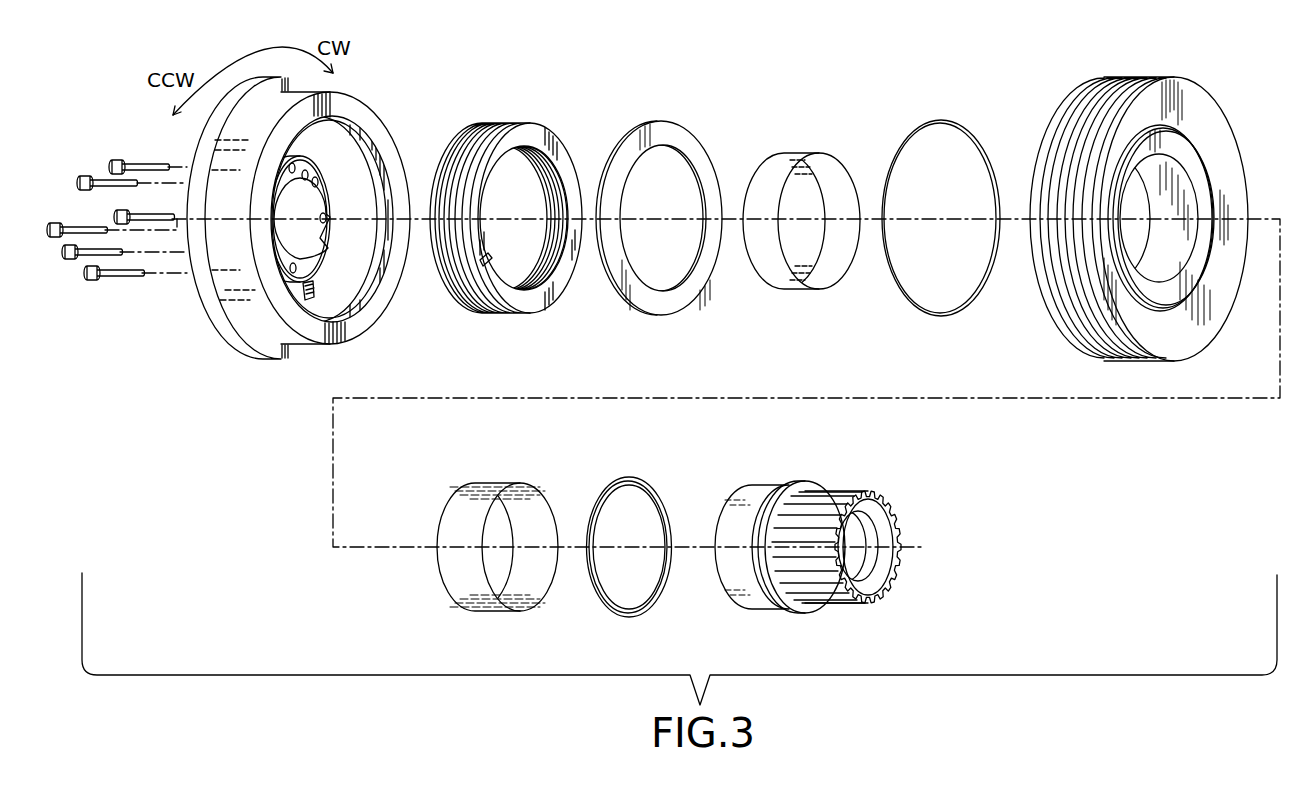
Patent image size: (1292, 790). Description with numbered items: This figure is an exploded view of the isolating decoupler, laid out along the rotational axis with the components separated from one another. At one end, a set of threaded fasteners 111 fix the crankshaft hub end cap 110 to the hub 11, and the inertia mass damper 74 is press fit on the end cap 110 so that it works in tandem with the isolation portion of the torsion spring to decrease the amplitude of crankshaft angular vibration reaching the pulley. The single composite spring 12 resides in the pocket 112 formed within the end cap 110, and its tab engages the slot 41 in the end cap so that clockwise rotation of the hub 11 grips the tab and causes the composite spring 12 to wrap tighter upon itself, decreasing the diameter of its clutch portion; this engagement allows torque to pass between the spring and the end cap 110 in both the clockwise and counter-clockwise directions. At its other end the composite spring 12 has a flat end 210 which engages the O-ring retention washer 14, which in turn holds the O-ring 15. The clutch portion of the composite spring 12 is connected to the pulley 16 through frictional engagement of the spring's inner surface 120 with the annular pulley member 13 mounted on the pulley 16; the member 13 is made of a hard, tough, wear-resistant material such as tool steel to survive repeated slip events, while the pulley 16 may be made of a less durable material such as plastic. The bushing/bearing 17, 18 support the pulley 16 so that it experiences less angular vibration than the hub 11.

The hub 11 is at (767, 488).
The composite spring 12 is at (520, 130).
The pulley member 13 is at (787, 153).
The O-ring retention washer 14 is at (677, 137).
The O-ring 15 is at (960, 123).
The pulley 16 is at (1212, 102).
The bushing/bearing 17 is at (500, 487).
The bushing/bearing 18 is at (645, 482).
The slot 41 is at (330, 287).
The inertia mass damper 74 is at (340, 103).
The crankshaft hub end cap 110 is at (327, 173).
The threaded fasteners 111 is at (153, 158).
The pocket 112 is at (350, 200).
The inner surface 120 is at (553, 165).
The flat end 210 is at (488, 268).